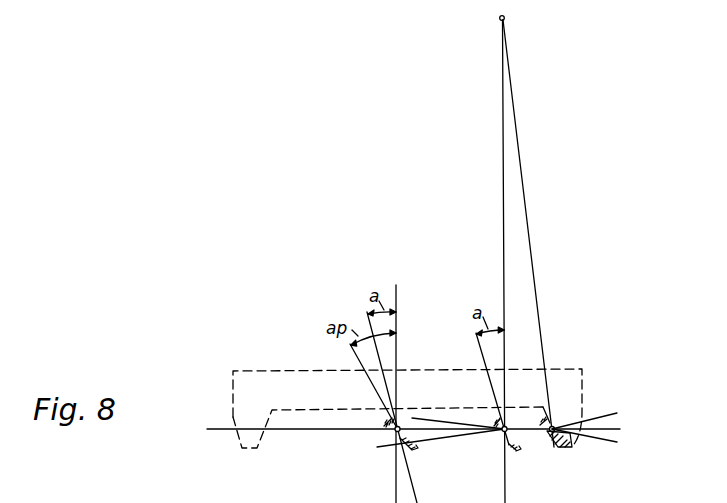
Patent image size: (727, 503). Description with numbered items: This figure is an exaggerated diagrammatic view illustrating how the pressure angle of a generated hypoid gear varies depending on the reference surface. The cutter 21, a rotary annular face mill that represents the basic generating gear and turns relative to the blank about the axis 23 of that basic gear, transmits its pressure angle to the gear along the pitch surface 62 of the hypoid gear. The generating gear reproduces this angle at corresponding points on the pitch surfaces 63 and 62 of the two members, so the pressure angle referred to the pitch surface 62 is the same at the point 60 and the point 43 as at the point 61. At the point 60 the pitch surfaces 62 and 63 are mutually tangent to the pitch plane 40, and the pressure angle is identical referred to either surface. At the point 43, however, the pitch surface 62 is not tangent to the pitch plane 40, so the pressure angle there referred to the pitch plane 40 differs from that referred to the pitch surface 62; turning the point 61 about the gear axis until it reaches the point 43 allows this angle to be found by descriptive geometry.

The rotary annular face mill 21 is at (572, 398).
The axis of the basic generating gear 23 is at (505, 21).
The pitch plane 40 is at (220, 431).
The point on the gear pitch surface 43 is at (396, 431).
The point of mutual tangency 60 is at (502, 432).
The point on the pitch surface 61 is at (551, 431).
The pitch surface of the hypoid gear 62 is at (600, 441).
The pitch surface of the basic generating gear 63 is at (603, 412).